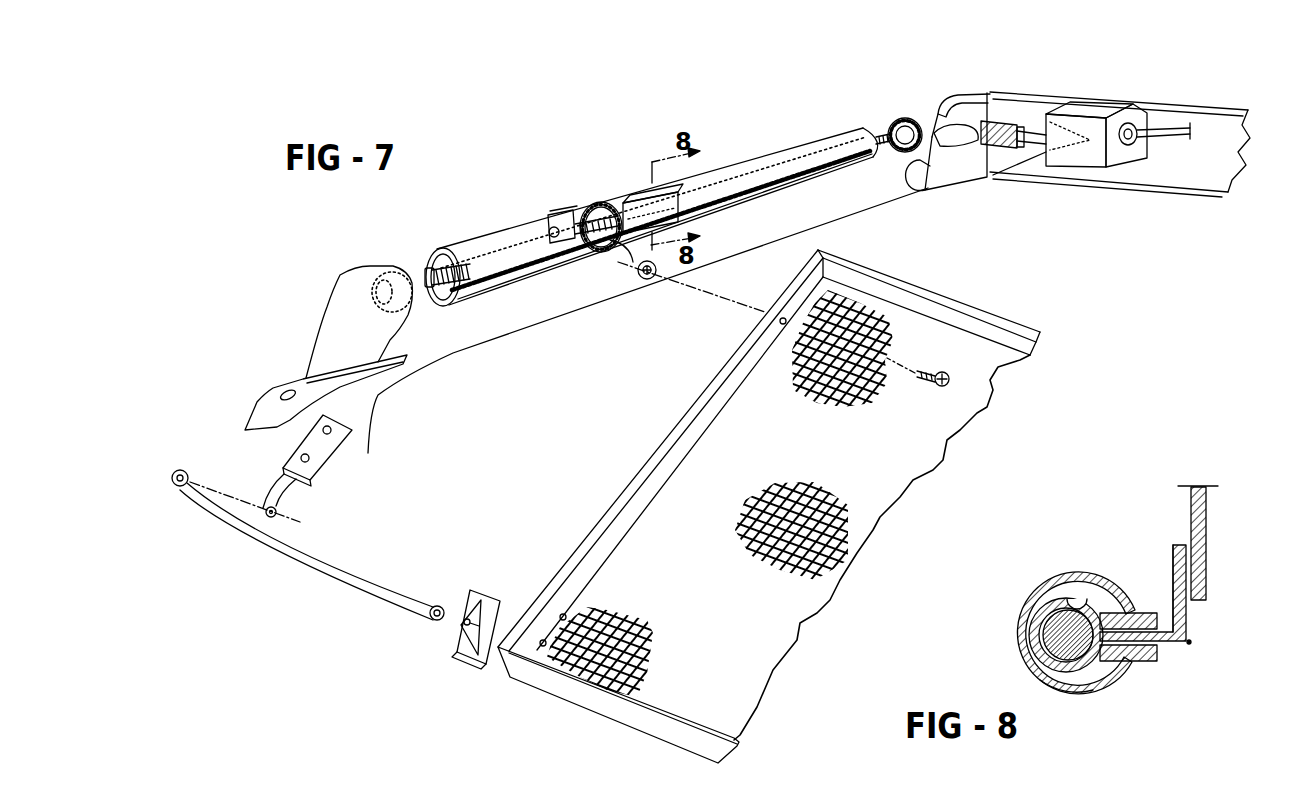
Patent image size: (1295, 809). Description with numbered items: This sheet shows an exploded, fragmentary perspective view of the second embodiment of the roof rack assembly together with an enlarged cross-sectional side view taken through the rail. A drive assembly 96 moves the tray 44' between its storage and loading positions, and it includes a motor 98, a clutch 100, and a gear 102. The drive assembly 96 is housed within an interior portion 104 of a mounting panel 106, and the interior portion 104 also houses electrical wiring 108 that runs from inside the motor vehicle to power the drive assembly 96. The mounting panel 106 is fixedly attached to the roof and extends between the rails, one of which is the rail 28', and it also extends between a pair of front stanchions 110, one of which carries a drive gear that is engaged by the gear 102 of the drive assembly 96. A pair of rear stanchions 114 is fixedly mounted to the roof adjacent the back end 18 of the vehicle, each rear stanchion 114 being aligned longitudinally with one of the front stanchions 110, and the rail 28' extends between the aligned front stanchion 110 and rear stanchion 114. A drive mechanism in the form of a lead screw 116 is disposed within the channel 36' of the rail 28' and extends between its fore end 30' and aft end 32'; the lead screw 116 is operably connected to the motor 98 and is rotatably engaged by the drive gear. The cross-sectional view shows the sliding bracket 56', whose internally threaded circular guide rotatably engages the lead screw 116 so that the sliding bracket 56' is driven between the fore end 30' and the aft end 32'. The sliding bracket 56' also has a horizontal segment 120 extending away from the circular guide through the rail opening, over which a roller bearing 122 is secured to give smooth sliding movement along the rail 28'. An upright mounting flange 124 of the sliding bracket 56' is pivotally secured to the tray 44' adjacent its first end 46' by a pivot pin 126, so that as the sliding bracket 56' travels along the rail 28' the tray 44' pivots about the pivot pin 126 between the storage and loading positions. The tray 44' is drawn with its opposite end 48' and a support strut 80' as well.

In FIG. 8, the back end 18 is at (1093, 690).
In FIG. 7, the rail 28' is at (657, 198).
In FIG. 8, the rail 28' is at (1050, 633).
In FIG. 7, the fore end 30' is at (657, 183).
In FIG. 7, the aft end 32' is at (462, 228).
In FIG. 8, the channel 36' is at (1066, 592).
In FIG. 7, the tray 44' is at (764, 495).
In FIG. 8, the tray 44' is at (1226, 543).
In FIG. 7, the first end 46' is at (924, 289).
In FIG. 7, the lower frame rail 48' is at (618, 644).
In FIG. 7, the sliding bracket 56' is at (669, 286).
In FIG. 8, the sliding bracket 56' is at (1230, 672).
In FIG. 7, the support strut 80' is at (336, 607).
In FIG. 7, the drive assembly 96 is at (1057, 170).
In FIG. 7, the motor 98 is at (1133, 164).
In FIG. 7, the clutch 100 is at (1030, 148).
In FIG. 7, the gear 102 is at (992, 96).
In FIG. 7, the interior portion 104 is at (908, 117).
In FIG. 7, the mounting panel 106 is at (1198, 100).
In FIG. 7, the electrical wiring 108 is at (1182, 140).
In FIG. 7, the front stanchion 110 is at (914, 191).
In FIG. 7, the rear stanchion 114 is at (337, 293).
In FIG. 7, the lead screw 116 is at (453, 300).
In FIG. 8, the lead screw 116 is at (1050, 641).
In FIG. 8, the horizontal segment 120 is at (1160, 650).
In FIG. 8, the roller bearing 122 is at (1148, 613).
In FIG. 8, the mounting flange 124 is at (1173, 620).
In FIG. 7, the pivot pin 126 is at (940, 387).